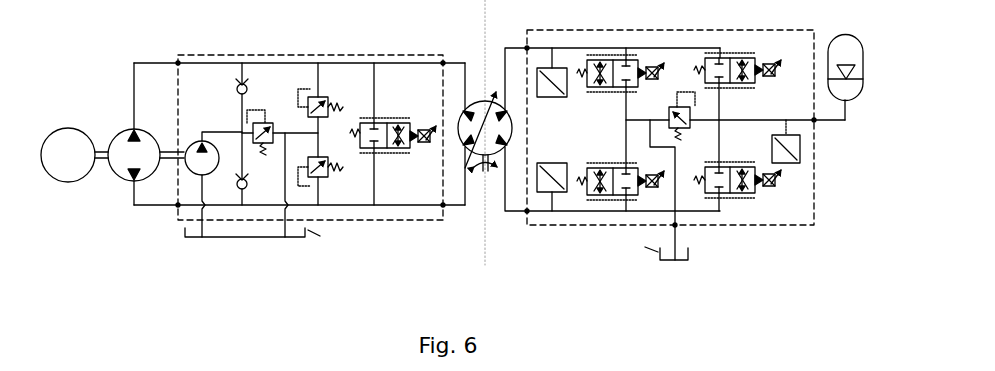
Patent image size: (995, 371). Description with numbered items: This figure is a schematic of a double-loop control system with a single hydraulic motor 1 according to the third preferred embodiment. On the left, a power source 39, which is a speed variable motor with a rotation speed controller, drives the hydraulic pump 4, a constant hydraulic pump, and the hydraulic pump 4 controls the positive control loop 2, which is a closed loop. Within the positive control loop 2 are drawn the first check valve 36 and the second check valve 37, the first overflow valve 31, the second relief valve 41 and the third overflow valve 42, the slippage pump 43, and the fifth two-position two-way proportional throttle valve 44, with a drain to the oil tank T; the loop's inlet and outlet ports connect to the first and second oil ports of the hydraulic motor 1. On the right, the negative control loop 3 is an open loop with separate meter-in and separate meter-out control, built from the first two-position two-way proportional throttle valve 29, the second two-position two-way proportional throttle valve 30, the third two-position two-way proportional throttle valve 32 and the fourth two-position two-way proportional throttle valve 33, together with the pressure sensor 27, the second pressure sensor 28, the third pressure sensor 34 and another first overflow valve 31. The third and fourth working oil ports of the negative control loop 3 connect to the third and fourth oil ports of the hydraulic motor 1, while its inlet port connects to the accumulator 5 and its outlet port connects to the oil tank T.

The hydraulic motor 1 is at (484, 106).
The positive control loop 2 is at (352, 220).
The negative control loop 3 is at (763, 227).
The hydraulic pump 4 is at (152, 141).
The accumulator 5 is at (837, 52).
The pressure sensor 27 is at (553, 98).
The second pressure sensor 28 is at (552, 163).
The first two-position two-way proportional throttle valve 29 is at (592, 68).
The second two-position two-way proportional throttle valve 30 is at (593, 167).
The first overflow valve 31 is at (258, 149).
The third two-position two-way proportional throttle valve 32 is at (745, 56).
The fourth two-position two-way proportional throttle valve 33 is at (745, 165).
The third pressure sensor 34 is at (792, 164).
The first check valve 36 is at (237, 85).
The second check valve 37 is at (237, 187).
The power source 39 is at (62, 131).
The second relief valve 41 is at (320, 113).
The third overflow valve 42 is at (320, 161).
The slippage pump 43 is at (213, 161).
The fifth two-position two-way proportional throttle valve 44 is at (403, 122).